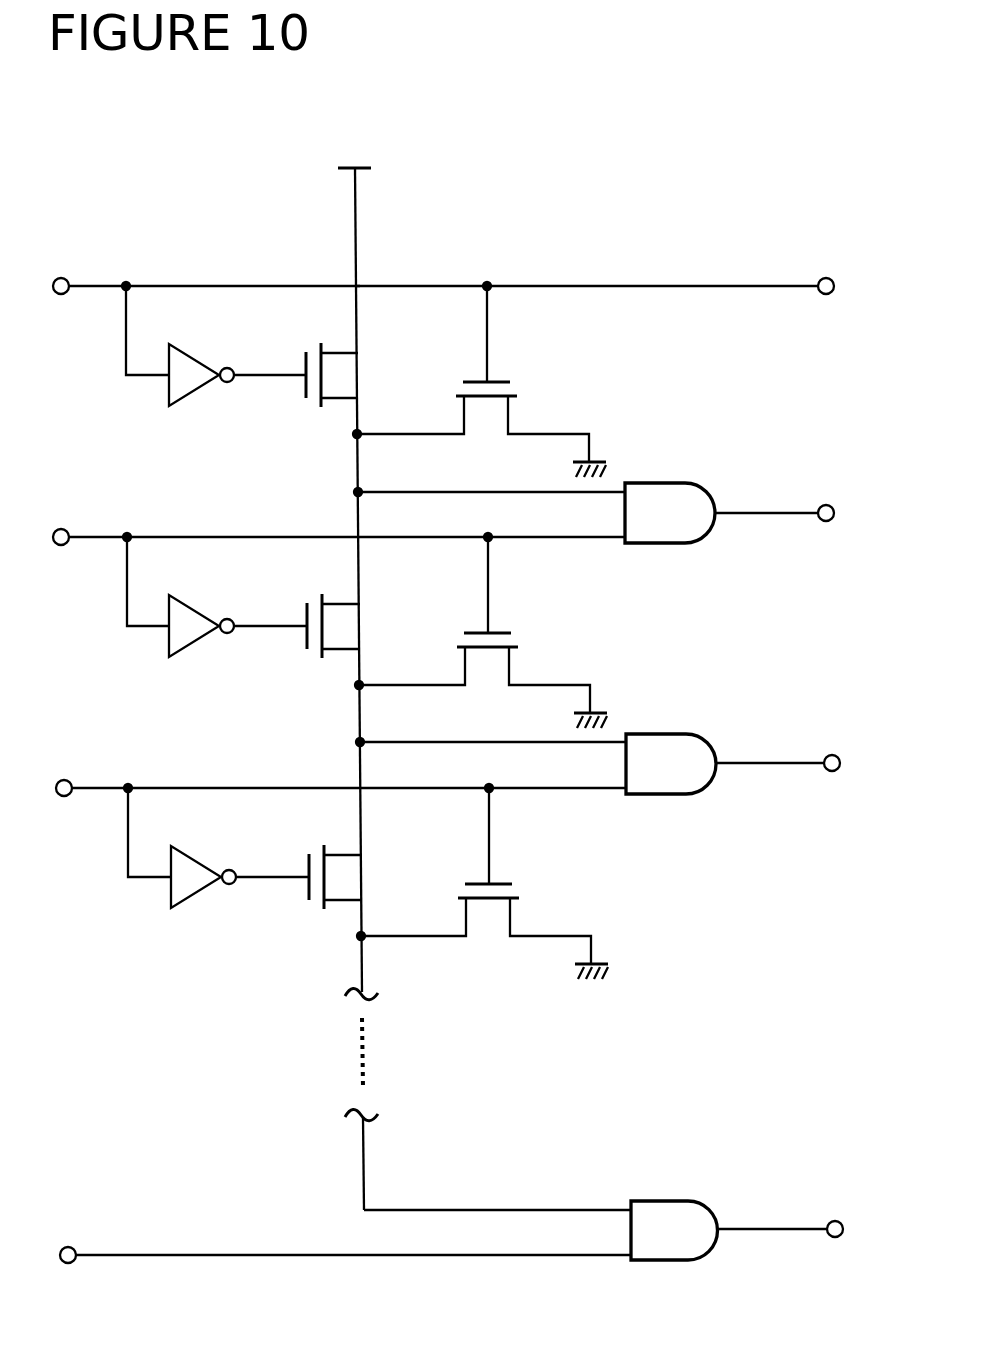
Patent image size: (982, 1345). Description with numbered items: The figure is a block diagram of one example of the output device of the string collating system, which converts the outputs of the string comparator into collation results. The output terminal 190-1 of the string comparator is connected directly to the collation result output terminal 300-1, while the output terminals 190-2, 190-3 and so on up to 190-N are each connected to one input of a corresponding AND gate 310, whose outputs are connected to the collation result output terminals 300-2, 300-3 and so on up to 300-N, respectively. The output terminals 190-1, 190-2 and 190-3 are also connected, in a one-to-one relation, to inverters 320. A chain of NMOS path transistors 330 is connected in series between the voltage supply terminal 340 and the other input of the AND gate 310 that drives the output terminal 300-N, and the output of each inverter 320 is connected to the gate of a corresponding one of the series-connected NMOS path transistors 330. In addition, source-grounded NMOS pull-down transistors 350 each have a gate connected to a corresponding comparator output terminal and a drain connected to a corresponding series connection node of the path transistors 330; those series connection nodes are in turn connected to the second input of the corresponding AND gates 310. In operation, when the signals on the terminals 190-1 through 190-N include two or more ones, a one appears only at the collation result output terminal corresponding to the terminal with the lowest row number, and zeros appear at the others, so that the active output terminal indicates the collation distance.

The output terminal of the string comparator 190-1 is at (62, 278).
The output terminal of the string comparator 190-2 is at (62, 529).
The output terminal of the string comparator 190-3 is at (65, 780).
The output terminal of the string comparator 190-N is at (69, 1247).
The collation result output terminal 300-1 is at (787, 285).
The collation result output terminal 300-2 is at (788, 512).
The collation result output terminal 300-3 is at (790, 762).
The collation result output terminal 300-N is at (795, 1228).
The AND gate 310 is at (655, 483).
The inverter 320 is at (181, 398).
The NMOS path transistor 330 is at (305, 360).
The voltage supply terminal Vcc 340 is at (356, 245).
The source-grounded NMOS pull-down transistor 350 is at (503, 381).